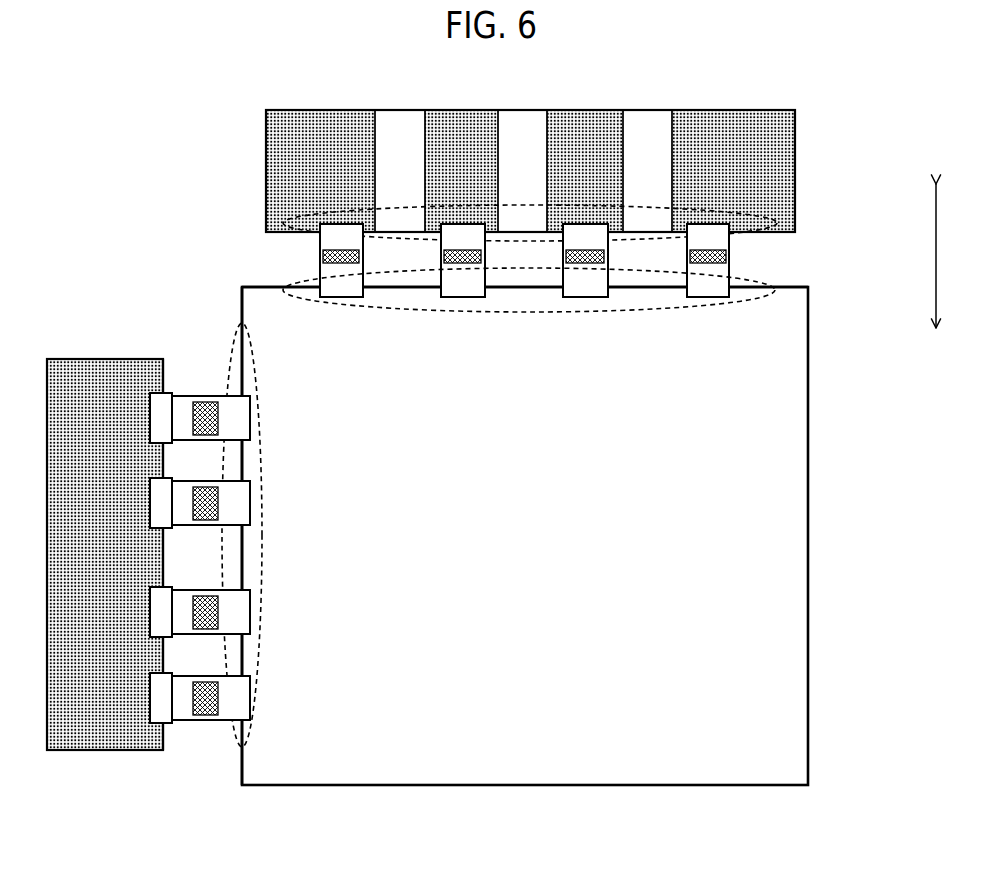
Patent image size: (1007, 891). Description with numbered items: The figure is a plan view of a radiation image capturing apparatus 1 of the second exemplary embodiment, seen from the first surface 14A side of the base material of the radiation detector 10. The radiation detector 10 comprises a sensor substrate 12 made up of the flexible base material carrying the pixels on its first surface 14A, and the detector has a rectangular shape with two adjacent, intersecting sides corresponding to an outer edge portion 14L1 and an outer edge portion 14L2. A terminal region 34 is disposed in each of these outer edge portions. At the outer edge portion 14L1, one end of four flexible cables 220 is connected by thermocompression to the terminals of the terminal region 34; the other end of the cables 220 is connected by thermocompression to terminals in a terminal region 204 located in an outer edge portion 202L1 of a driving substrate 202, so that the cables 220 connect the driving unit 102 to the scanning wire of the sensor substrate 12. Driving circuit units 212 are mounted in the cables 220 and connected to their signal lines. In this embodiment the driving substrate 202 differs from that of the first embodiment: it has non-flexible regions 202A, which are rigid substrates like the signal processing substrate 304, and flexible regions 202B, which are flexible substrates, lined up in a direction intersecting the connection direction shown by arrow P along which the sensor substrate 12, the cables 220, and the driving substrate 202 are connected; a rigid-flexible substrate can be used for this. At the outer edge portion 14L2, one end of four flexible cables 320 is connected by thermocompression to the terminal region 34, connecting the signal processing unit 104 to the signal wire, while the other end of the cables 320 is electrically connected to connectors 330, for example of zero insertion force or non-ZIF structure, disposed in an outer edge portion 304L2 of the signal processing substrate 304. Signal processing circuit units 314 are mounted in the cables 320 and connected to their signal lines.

The radiation image capturing apparatus 1 is at (864, 870).
The radiation detector 10 is at (784, 673).
The sensor substrate 12 is at (786, 570).
The first surface 14A is at (788, 435).
The outer edge portion 14L1 is at (262, 283).
The outer edge portion 14L2 is at (231, 776).
The terminal region 34 is at (770, 290).
The driving unit 102 is at (872, 183).
The driving substrate 202 is at (795, 190).
The non-flexible region 202A is at (322, 127).
The flexible region 202B is at (400, 127).
The outer edge portion 202L1 is at (302, 232).
The terminal region 204 is at (732, 205).
The driving circuit unit 212 is at (707, 256).
The cable 220 is at (714, 287).
The connection direction P is at (945, 256).
The signal processing unit 104 is at (205, 333).
The signal processing substrate 304 is at (117, 361).
The outer edge portion 304L2 is at (170, 738).
The signal processing circuit unit 314 is at (194, 399).
The cable 320 is at (183, 709).
The connector 330 is at (150, 730).